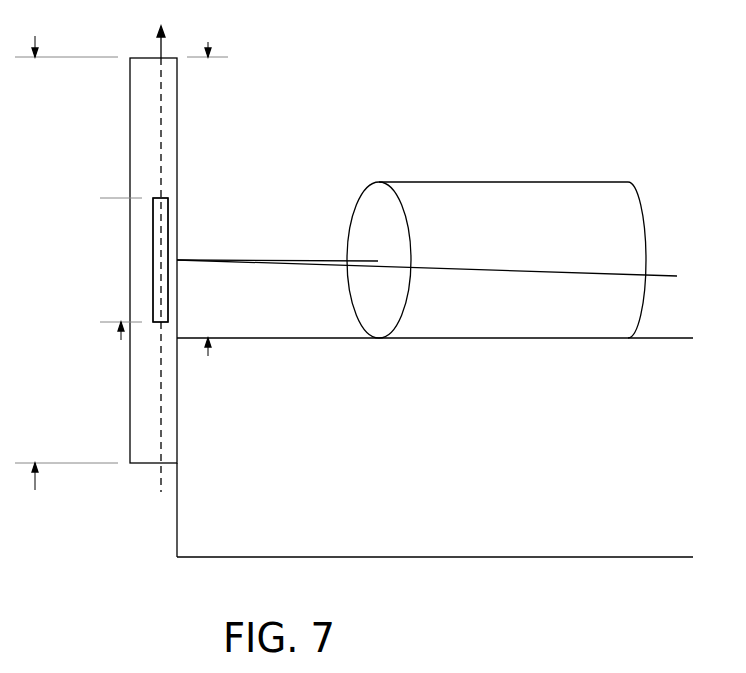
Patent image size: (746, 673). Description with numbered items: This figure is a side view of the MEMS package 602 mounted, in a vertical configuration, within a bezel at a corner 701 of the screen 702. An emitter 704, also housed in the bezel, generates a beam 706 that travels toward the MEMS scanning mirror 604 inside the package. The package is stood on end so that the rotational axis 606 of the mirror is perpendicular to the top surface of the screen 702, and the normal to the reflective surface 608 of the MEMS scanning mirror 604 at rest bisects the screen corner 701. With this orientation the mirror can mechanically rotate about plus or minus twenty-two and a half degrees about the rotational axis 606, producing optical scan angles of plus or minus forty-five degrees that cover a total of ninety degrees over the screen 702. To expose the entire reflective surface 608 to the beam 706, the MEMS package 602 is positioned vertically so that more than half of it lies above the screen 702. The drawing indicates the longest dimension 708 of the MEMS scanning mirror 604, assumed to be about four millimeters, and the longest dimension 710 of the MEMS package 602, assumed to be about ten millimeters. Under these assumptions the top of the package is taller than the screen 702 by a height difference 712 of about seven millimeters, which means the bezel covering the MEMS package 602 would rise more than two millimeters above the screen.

The MEMS package 602 is at (130, 110).
The MEMS scanning mirror 604 is at (163, 202).
The rotational axis 606 is at (161, 50).
The reflective surface 608 is at (168, 240).
The corner 701 is at (177, 527).
The screen 702 is at (544, 542).
The emitter 704 is at (503, 182).
The beam 706 is at (317, 266).
The longest dimension of MEMS scanning mirror 708 is at (121, 190).
The longest dimension of MEMS package 710 is at (66, 276).
The height difference 712 is at (207, 187).